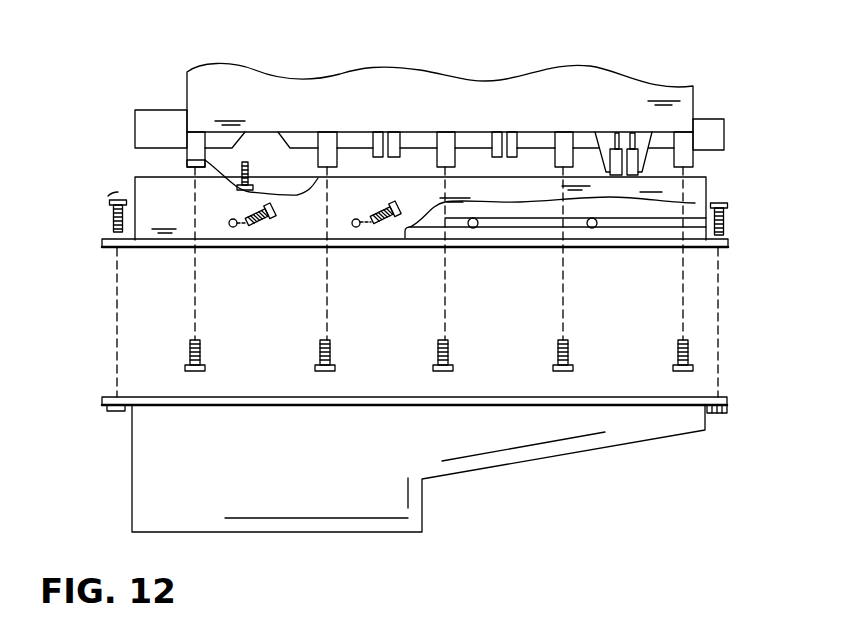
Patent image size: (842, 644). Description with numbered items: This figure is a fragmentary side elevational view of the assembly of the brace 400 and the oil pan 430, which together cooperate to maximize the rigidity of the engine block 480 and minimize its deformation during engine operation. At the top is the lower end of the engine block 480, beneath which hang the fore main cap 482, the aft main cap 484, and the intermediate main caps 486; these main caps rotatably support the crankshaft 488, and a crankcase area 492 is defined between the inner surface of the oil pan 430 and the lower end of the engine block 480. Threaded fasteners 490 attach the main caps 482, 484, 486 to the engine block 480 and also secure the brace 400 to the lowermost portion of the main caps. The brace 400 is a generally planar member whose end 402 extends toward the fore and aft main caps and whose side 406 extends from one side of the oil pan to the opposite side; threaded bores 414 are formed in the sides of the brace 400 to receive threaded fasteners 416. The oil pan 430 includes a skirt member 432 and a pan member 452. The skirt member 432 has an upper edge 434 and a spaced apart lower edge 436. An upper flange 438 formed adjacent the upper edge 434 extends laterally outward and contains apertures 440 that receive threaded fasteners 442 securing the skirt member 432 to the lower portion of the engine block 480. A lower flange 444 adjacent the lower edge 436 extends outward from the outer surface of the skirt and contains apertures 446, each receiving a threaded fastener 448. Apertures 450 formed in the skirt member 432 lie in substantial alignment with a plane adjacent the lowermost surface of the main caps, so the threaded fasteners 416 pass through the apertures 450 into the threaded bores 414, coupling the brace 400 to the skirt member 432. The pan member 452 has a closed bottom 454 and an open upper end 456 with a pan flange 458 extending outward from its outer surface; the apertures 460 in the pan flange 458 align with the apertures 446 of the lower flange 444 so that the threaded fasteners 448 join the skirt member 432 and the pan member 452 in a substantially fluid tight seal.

The brace 400 is at (649, 238).
The end of brace 402 is at (693, 224).
The side of brace 406 is at (530, 224).
The threaded bores 414 is at (474, 229).
The threaded fastener 416 is at (263, 224).
The oil pan 430 is at (358, 488).
The skirt member 432 is at (108, 196).
The upper edge 434 is at (134, 180).
The lower edge 436 is at (136, 230).
The upper flange 438 is at (215, 178).
The apertures 440 is at (188, 164).
The threaded fastener 442 is at (252, 167).
The lower flange 444 is at (102, 245).
The apertures 446 is at (118, 250).
The threaded fastener 448 is at (110, 207).
The apertures 450 is at (232, 228).
The pan member 452 is at (150, 452).
The closed bottom 454 is at (378, 533).
The open upper end 456 is at (485, 398).
The pan flange 458 is at (729, 409).
The apertures 460 is at (110, 397).
The engine block 480 is at (626, 80).
The fore main cap 482 is at (697, 164).
The aft main cap 484 is at (197, 140).
The intermediate main caps 486 is at (327, 138).
The crankshaft 488 is at (710, 118).
The threaded fasteners 490 is at (187, 349).
The crankcase area 492 is at (395, 137).